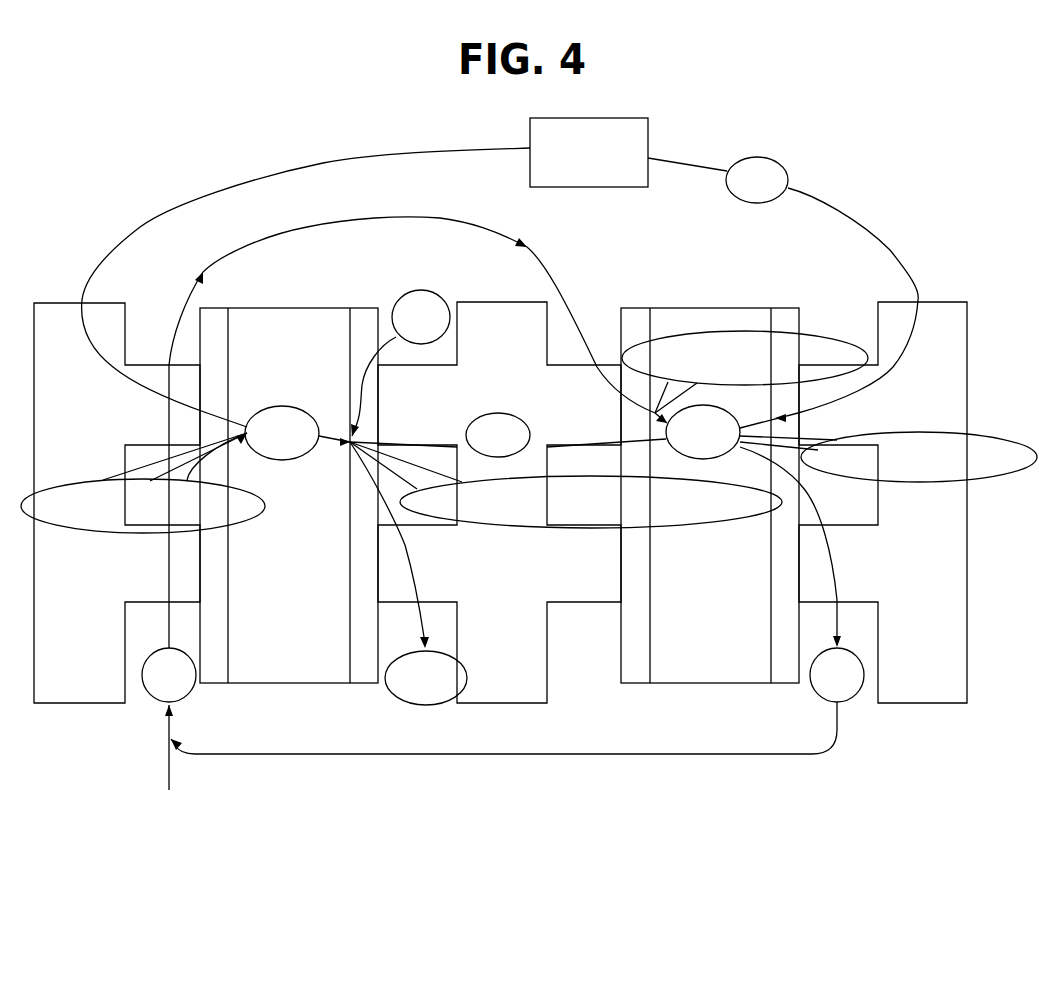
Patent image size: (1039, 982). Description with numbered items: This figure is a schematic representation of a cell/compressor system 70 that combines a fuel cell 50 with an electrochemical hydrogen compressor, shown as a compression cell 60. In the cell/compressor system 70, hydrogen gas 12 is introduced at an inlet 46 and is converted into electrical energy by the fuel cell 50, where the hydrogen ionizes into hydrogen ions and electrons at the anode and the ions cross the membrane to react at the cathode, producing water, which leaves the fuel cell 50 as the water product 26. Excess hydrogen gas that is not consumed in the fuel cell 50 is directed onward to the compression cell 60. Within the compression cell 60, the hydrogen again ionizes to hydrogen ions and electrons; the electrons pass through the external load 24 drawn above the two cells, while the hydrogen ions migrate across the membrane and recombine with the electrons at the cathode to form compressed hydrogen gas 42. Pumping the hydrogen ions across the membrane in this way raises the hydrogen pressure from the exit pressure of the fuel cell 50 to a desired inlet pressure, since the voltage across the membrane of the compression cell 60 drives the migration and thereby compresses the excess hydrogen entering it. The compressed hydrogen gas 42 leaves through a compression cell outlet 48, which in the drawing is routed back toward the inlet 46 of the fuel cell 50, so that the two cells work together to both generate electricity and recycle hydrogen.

The hydrogen gas 12 is at (158, 651).
The external load 24 is at (589, 152).
The water outlet 26 is at (416, 705).
The compressed hydrogen gas 42 is at (826, 696).
The inlet 46 is at (165, 745).
The compression cell outlet 48 is at (838, 731).
The fuel cell 50 is at (37, 787).
The compression cell 60 is at (975, 787).
The cell/compressor system 70 is at (927, 195).